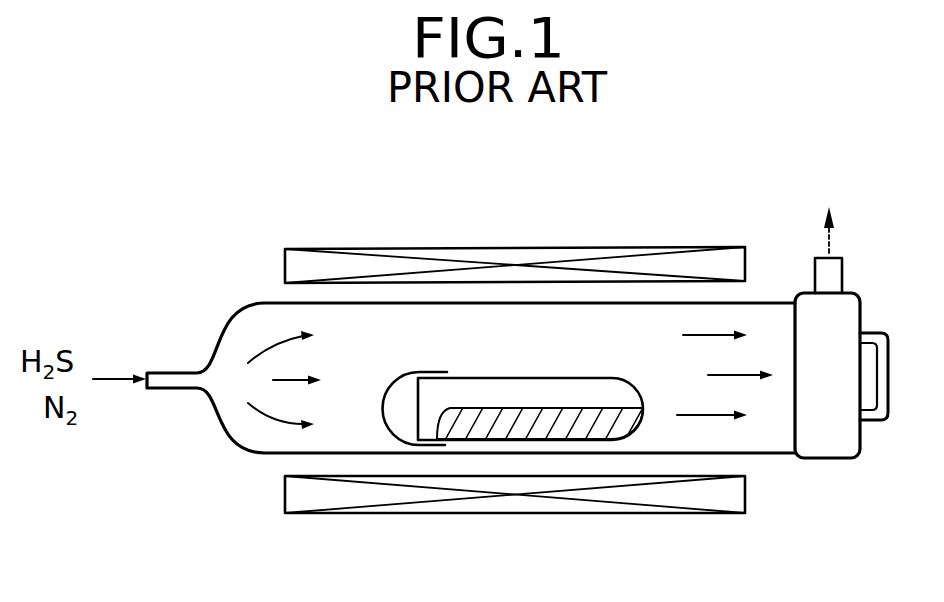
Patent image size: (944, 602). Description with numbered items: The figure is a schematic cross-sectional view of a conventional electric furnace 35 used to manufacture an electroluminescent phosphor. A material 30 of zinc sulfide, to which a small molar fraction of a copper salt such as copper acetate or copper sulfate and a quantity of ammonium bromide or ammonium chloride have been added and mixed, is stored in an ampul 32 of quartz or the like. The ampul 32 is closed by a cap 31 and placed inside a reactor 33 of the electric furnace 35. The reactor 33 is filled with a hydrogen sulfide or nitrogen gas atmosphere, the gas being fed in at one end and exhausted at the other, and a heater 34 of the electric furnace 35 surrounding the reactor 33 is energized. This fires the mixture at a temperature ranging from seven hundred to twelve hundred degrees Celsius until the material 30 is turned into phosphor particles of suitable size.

The material 30 is at (553, 409).
The cap 31 is at (385, 420).
The ampul 32 is at (503, 378).
The reactor 33 is at (280, 318).
The heater 34 is at (317, 262).
The electric furnace 35 is at (699, 241).